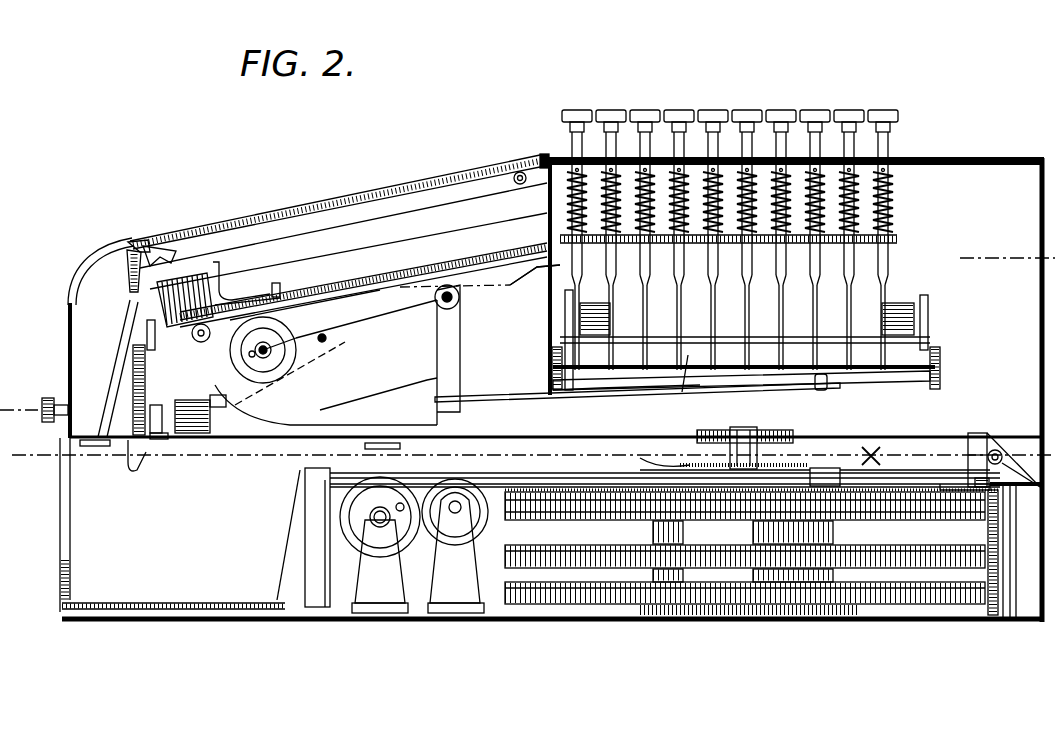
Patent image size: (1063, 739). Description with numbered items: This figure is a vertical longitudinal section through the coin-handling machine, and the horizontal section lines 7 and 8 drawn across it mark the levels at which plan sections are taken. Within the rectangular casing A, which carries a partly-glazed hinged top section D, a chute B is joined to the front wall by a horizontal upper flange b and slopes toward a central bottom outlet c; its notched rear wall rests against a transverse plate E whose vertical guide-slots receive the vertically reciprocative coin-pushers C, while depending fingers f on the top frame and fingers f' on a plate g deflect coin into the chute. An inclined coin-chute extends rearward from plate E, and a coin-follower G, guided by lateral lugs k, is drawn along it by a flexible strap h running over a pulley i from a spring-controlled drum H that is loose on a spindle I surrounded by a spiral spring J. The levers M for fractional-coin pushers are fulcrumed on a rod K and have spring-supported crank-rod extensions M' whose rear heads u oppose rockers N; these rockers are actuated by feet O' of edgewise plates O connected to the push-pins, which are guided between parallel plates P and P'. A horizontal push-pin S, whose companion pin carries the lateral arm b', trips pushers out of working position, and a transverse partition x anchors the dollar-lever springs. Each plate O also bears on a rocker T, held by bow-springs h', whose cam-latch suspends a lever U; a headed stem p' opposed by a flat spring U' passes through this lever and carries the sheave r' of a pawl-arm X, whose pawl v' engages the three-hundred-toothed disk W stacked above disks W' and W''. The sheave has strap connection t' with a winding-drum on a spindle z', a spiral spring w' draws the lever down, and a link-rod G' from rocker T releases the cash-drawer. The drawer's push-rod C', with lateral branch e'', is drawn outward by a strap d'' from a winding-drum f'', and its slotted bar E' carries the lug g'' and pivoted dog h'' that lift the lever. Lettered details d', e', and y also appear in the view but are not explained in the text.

The casing A is at (553, 637).
The chute B is at (112, 350).
The coin-pushers C is at (249, 350).
The push-rod C' is at (304, 529).
The hinged top section D is at (276, 206).
The transverse plate E is at (180, 440).
The slotted bar E' is at (637, 419).
The coin-follower G is at (245, 296).
The link-rod G' is at (949, 342).
The spring-controlled drum H is at (290, 345).
The spindle I is at (330, 338).
The spiral spring J is at (370, 275).
The rod K is at (470, 300).
The levers M is at (326, 362).
The crank-rod extensions M' is at (650, 410).
The rockers N is at (600, 395).
The plates O is at (747, 306).
The feet O' is at (693, 389).
The upper guide plate P is at (722, 240).
The lower guide plate P' is at (708, 214).
The horizontal push-pin S is at (58, 400).
The rocker T is at (700, 342).
The lever U is at (745, 421).
The flat spring U' is at (743, 432).
The toothed disk W is at (944, 513).
The toothed disk W' is at (752, 550).
The toothed disk W'' is at (948, 575).
The pawl-arm X is at (862, 478).
The upper flange b is at (139, 335).
The lateral arm b' is at (138, 465).
The bottom outlet c is at (112, 447).
The plate d' is at (128, 390).
The flexible strap d'' is at (665, 460).
The stud e' is at (232, 437).
The lateral branch e'' is at (752, 449).
The depending fingers f is at (118, 271).
The fingers f' is at (172, 232).
The winding-drum f'' is at (380, 545).
The plate g is at (144, 224).
The lug g'' is at (983, 443).
The flexible strap h is at (241, 278).
The bow-springs h' is at (735, 314).
The dog h'' is at (1013, 446).
The pulley i is at (175, 328).
The lateral lugs k is at (282, 290).
The headed stem p' is at (665, 441).
The sheave r' is at (734, 465).
The flexible strap connection t' is at (665, 468).
The rear heads u is at (825, 385).
The pawl v' is at (959, 466).
The spiral spring w' is at (455, 546).
The transverse partition x is at (545, 325).
The pad y is at (163, 448).
The spindle z' is at (454, 525).
The section line 7 is at (1048, 242).
The section line 8 is at (1048, 440).